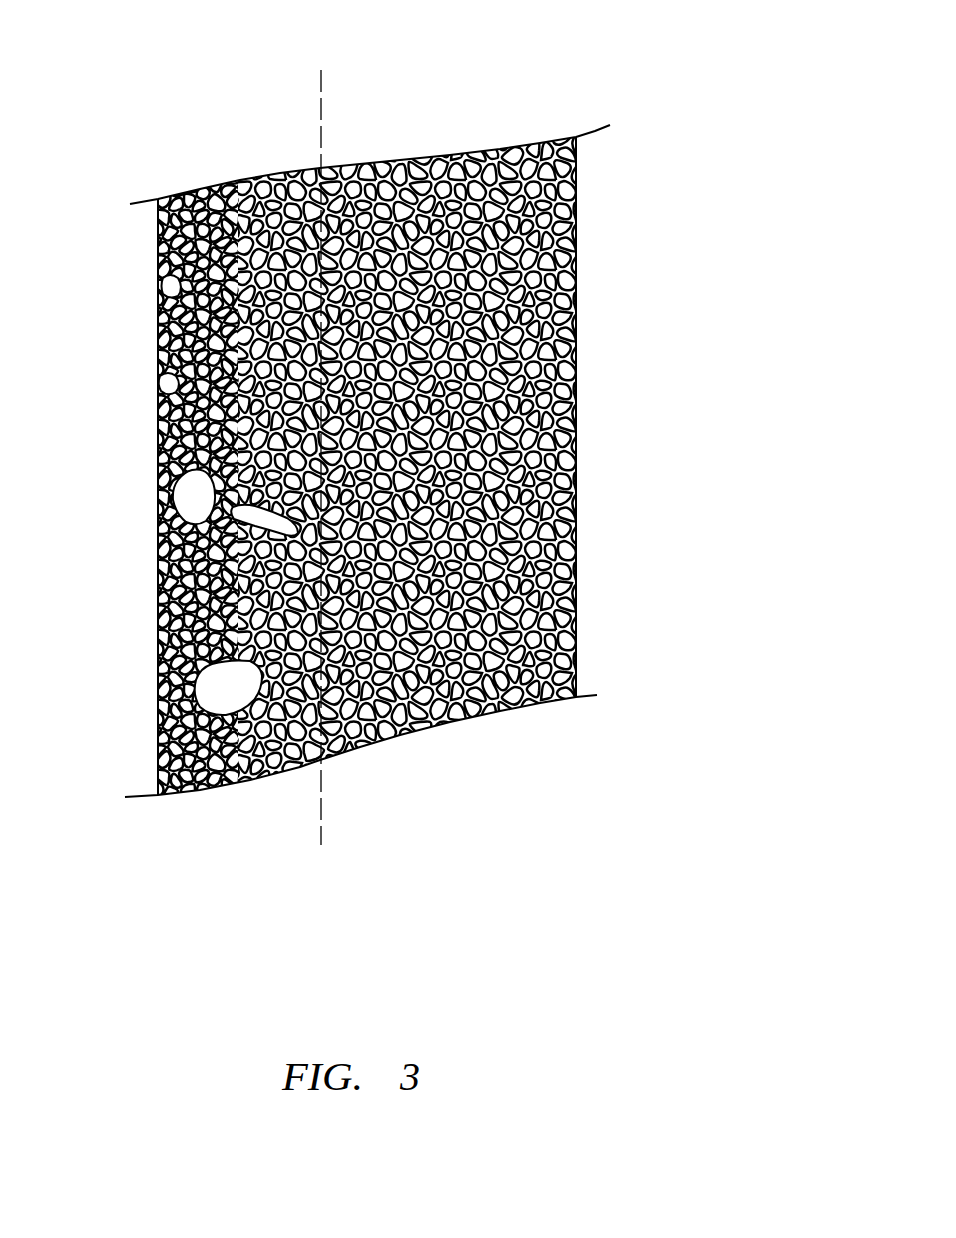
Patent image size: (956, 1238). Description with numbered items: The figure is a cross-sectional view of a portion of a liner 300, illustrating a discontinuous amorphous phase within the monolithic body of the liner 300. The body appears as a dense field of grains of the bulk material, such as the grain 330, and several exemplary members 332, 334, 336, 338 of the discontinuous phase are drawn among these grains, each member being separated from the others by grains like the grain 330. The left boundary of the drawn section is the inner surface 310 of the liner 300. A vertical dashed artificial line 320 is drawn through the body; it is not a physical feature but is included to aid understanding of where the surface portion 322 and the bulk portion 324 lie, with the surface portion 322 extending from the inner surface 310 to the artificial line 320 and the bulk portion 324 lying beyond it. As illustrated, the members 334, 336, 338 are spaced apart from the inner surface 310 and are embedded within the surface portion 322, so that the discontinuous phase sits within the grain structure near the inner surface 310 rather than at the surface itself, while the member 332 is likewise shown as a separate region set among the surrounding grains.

The liner 300 is at (593, 47).
The inner surface 310 is at (158, 232).
The artificial line 320 is at (321, 830).
The surface portion 322 is at (235, 168).
The bulk portion 324 is at (483, 738).
The grain 330 is at (163, 382).
The member of the discontinuous phase 332 is at (168, 285).
The member of the discontinuous phase 334 is at (185, 510).
The member of the discontinuous phase 336 is at (255, 522).
The member of the discontinuous phase 338 is at (210, 680).